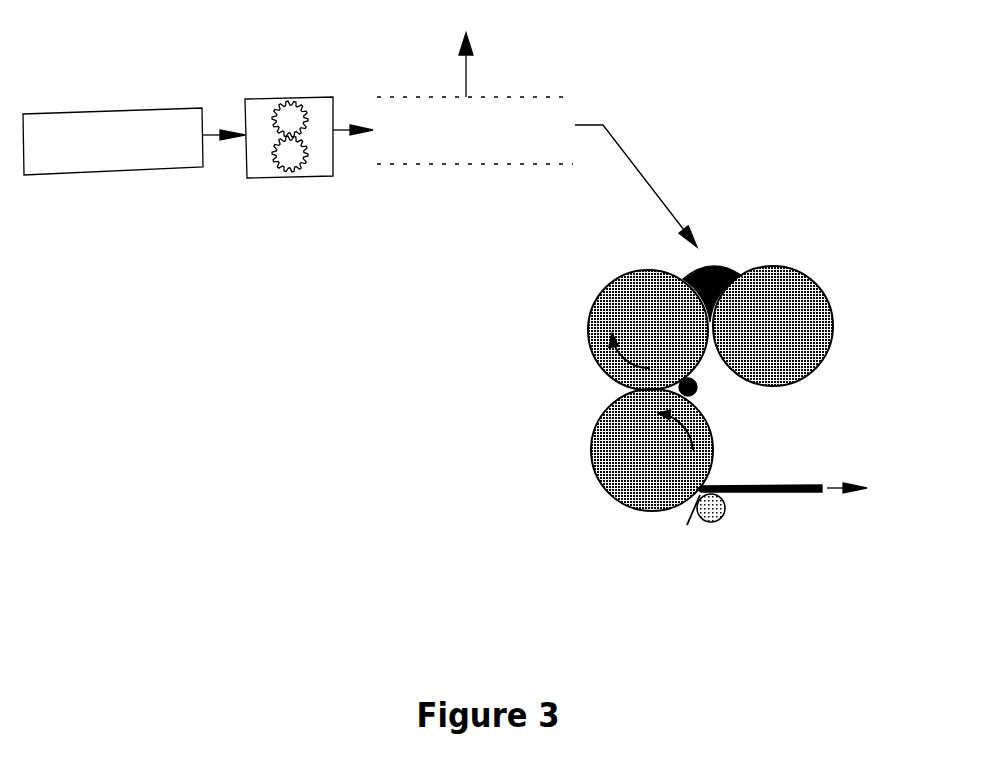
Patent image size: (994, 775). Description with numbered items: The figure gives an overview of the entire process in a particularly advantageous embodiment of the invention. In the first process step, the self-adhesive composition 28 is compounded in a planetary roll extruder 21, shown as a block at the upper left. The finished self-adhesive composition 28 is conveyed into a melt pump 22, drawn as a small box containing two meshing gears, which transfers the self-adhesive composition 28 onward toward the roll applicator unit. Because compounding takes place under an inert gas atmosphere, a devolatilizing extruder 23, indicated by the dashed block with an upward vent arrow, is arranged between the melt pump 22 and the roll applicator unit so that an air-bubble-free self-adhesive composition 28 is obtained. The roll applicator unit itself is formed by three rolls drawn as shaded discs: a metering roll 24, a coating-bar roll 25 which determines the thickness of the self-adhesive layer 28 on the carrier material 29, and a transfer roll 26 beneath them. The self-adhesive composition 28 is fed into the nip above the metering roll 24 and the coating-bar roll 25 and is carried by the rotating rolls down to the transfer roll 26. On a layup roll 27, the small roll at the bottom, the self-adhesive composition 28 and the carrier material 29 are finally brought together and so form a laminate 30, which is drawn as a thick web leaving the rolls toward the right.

The planetary roll extruder 21 is at (87, 157).
The melt pump 22 is at (265, 170).
The devolatilizing extruder 23 is at (488, 147).
The metering roll 24 is at (625, 320).
The coating-bar roll 25 is at (777, 322).
The transfer roll 26 is at (630, 472).
The layup roll 27 is at (720, 513).
The self-adhesive composition 28 is at (715, 267).
The carrier material 29 is at (687, 525).
The laminate 30 is at (793, 485).